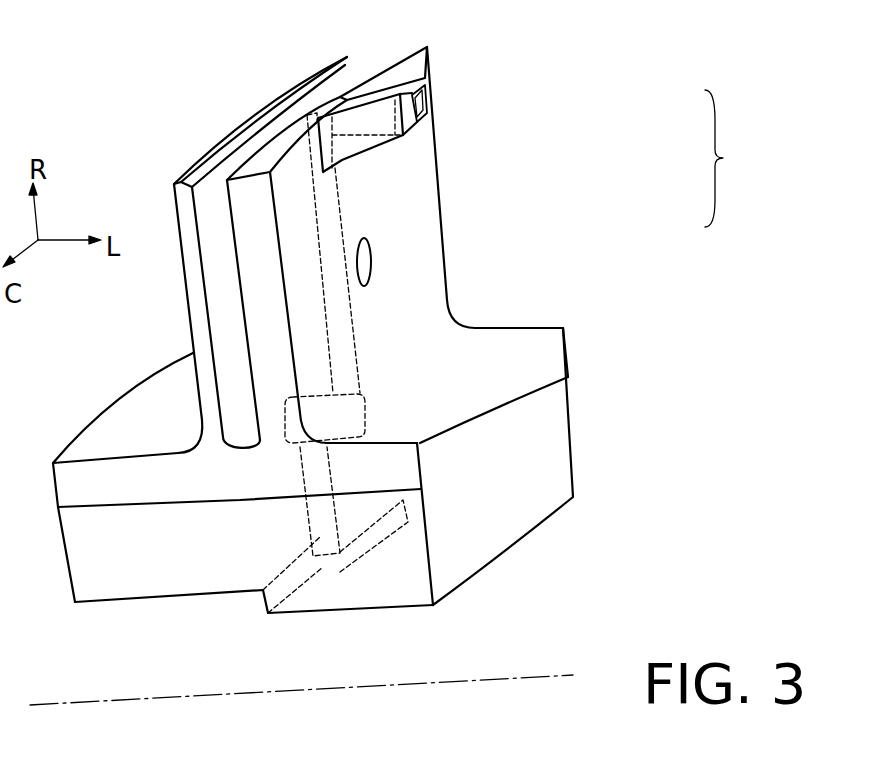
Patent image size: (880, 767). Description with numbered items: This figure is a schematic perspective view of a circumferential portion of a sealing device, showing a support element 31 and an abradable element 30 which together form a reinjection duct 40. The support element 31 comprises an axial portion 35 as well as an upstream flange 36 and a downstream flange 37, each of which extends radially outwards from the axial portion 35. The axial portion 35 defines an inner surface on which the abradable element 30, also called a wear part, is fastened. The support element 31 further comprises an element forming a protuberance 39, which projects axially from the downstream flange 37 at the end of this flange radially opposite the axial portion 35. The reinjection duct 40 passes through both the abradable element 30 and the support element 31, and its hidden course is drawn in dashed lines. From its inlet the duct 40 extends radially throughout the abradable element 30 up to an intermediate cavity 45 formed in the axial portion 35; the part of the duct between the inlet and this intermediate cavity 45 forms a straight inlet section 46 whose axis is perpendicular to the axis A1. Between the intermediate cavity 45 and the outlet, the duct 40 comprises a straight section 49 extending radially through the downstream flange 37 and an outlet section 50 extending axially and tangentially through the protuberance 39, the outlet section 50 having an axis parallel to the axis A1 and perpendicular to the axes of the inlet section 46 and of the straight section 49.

The abradable element 30 is at (145, 572).
The support element 31 is at (489, 195).
The axial portion 35 is at (163, 400).
The upstream flange 36 is at (207, 155).
The downstream flange 37 is at (274, 143).
The protuberance 39 is at (388, 90).
The reinjection duct 40 is at (733, 158).
The intermediate cavity 45 is at (347, 417).
The straight inlet section 46 is at (317, 473).
The straight section 49 is at (327, 222).
The outlet section 50 is at (432, 131).
The axis A1 is at (508, 677).